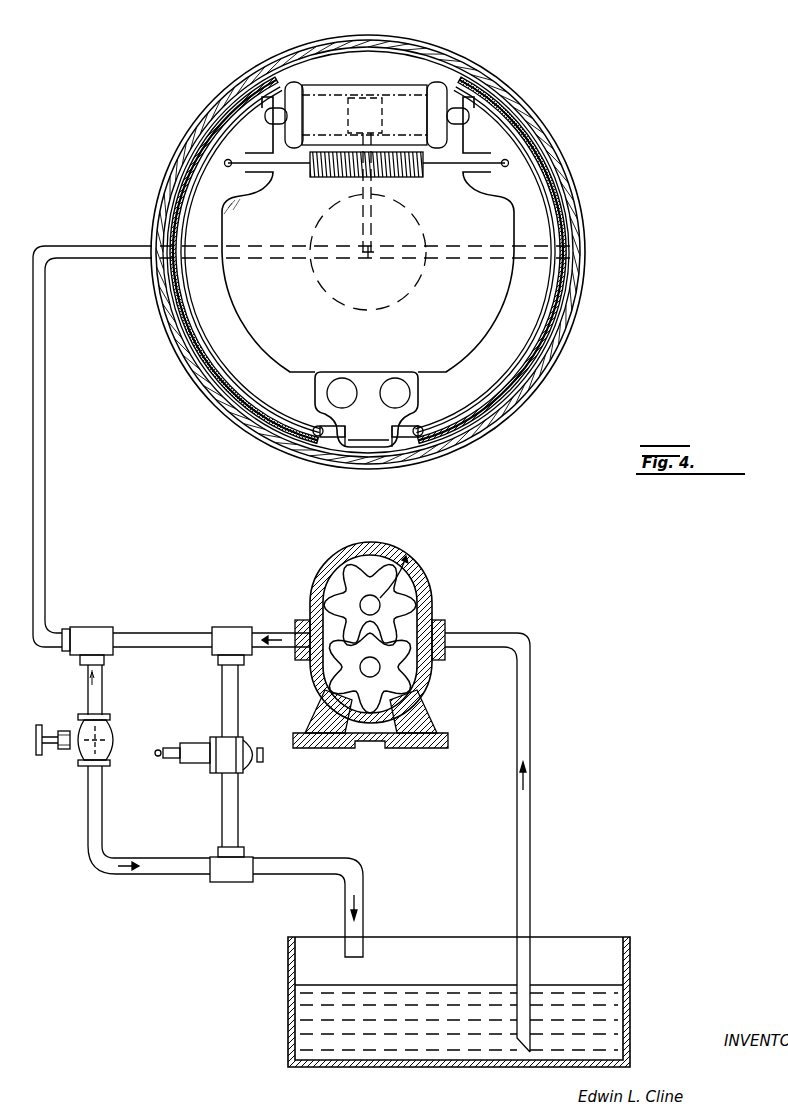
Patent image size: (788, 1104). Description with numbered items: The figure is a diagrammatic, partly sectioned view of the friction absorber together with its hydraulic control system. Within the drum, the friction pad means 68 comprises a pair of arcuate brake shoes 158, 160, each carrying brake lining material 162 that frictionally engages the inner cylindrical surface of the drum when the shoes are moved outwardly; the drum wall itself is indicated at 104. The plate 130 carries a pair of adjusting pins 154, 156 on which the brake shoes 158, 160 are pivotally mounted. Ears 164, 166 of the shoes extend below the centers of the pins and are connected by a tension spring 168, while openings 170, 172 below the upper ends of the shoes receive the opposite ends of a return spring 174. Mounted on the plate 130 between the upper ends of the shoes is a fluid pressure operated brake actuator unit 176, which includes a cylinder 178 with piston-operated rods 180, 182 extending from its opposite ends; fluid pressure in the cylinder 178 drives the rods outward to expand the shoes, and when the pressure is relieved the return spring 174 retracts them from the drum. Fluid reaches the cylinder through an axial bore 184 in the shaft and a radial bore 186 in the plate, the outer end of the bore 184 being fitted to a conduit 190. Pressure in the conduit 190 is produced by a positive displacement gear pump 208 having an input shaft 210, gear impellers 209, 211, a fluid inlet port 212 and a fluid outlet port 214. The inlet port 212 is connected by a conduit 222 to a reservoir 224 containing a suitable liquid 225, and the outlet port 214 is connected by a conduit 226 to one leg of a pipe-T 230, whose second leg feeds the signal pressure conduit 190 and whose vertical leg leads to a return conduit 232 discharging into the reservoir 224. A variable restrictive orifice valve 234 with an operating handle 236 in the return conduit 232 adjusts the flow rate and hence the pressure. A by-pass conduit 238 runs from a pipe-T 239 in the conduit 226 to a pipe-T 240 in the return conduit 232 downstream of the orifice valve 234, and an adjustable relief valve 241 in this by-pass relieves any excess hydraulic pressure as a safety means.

The friction pad means 68 is at (182, 135).
The backing plate 104 is at (578, 266).
The plate 130 is at (400, 60).
The adjusting pin 154 is at (342, 380).
The adjusting pin 156 is at (396, 380).
The brake shoe 158 is at (226, 276).
The brake shoe 160 is at (518, 235).
The brake lining material 162 is at (190, 158).
The ear 164 is at (319, 436).
The ear 166 is at (418, 436).
The tension spring 168 is at (348, 442).
The opening 170 is at (226, 166).
The opening 172 is at (508, 166).
The return spring 174 is at (405, 172).
The brake actuator unit 176 is at (330, 80).
The cylinder 178 is at (360, 98).
The piston-operated rod 180 is at (265, 118).
The piston-operated rod 182 is at (469, 118).
The axial bore 184 is at (367, 252).
The radial bore 186 is at (362, 190).
The conduit 190 is at (44, 401).
The positive displacement gear pump 208 is at (418, 565).
The gear impeller 209 is at (388, 556).
The input shaft 210 is at (392, 604).
The gear impeller 211 is at (418, 660).
The fluid inlet port 212 is at (448, 632).
The fluid outlet port 214 is at (300, 656).
The conduit 222 is at (531, 805).
The reservoir 224 is at (632, 938).
The liquid 225 is at (418, 985).
The conduit 226 is at (173, 633).
The pipe-T 230 is at (90, 627).
The return conduit 232 is at (102, 795).
The variable restrictive orifice valve 234 is at (108, 738).
The operating handle 236 is at (42, 762).
The by-pass conduit 238 is at (240, 808).
The pipe-T 239 is at (232, 627).
The pipe-T 240 is at (218, 880).
The adjustable relief valve 241 is at (240, 760).